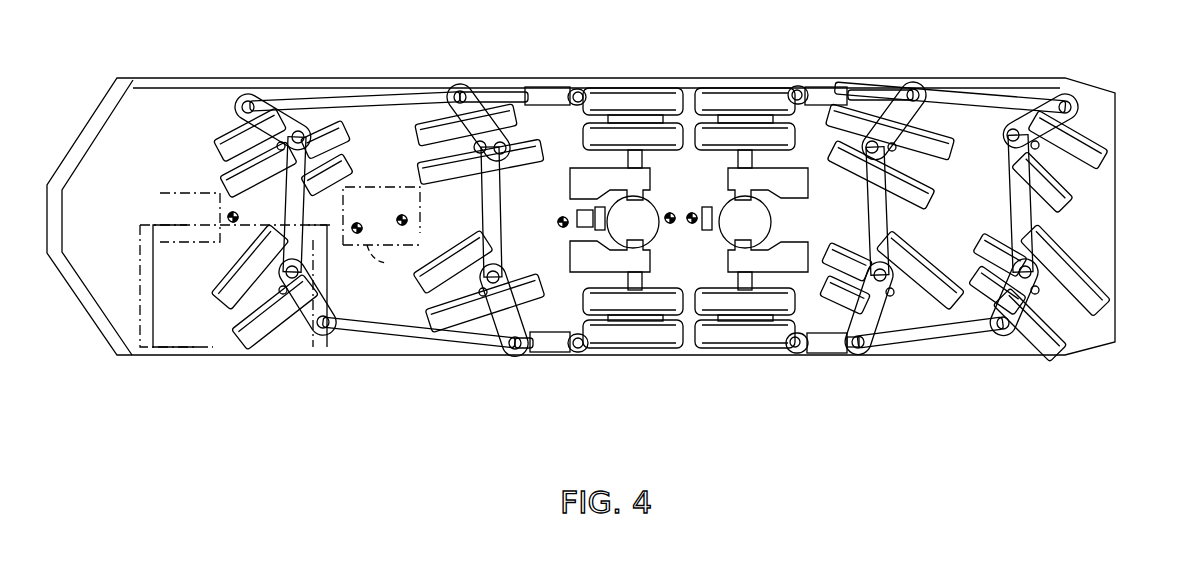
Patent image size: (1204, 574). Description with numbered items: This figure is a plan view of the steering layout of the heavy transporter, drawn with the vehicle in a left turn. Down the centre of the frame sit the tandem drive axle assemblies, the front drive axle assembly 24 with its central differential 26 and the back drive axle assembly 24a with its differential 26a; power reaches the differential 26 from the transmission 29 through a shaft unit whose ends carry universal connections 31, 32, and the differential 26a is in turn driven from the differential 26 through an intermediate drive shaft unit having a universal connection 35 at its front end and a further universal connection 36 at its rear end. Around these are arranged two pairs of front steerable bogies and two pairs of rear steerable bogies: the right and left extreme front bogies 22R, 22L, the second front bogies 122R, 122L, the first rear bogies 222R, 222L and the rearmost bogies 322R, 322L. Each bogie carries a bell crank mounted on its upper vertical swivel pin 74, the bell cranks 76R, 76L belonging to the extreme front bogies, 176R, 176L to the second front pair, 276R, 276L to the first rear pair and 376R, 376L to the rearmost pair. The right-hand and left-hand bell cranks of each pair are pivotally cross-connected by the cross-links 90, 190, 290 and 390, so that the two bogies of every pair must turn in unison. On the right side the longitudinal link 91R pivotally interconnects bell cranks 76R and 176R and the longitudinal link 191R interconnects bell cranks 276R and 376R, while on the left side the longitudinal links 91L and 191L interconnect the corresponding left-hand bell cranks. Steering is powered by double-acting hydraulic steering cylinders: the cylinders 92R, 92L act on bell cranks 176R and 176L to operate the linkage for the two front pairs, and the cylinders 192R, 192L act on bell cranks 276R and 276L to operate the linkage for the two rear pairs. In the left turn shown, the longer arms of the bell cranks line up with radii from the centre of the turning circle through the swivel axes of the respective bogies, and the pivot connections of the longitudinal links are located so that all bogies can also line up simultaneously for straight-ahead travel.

The right extreme front bogie 22R is at (190, 154).
The left extreme front bogie 22L is at (217, 362).
The swivel pin 74 is at (232, 162).
The bell crank 76R is at (260, 122).
The bell crank 76L is at (310, 304).
The cross-link 90 is at (290, 208).
The longitudinal link 91R is at (328, 104).
The longitudinal link 91L is at (348, 330).
The double-acting hydraulic steering cylinder 92R is at (563, 68).
The double-acting hydraulic steering cylinder 92L is at (545, 349).
The right second front bogie 122R is at (416, 141).
The left second front bogie 122L is at (413, 364).
The bell crank 176R is at (505, 125).
The bell crank 176L is at (506, 286).
The cross-link 190 is at (490, 213).
The double-acting hydraulic steering cylinder 192R is at (826, 94).
The double-acting hydraulic steering cylinder 192L is at (808, 348).
The longitudinal link 191R is at (1015, 63).
The longitudinal link 191L is at (925, 340).
The right first rear bogie 222R is at (905, 163).
The left first rear bogie 222L is at (887, 364).
The bell crank 276R is at (952, 62).
The bell crank 276L is at (892, 276).
The cross-link 290 is at (875, 223).
The right rearmost bogie 322R is at (1082, 180).
The left rearmost bogie 322L is at (1048, 364).
The bell crank 376R is at (1050, 131).
The bell crank 376L is at (1035, 282).
The cross-link 390 is at (1023, 217).
The front drive axle assembly 24 is at (652, 362).
The back drive axle assembly 24a is at (753, 362).
The differential 26 is at (648, 233).
The differential 26a is at (763, 218).
The transmission 29 is at (392, 260).
The universal connection 31 is at (420, 225).
The universal connection 32 is at (559, 227).
The universal connection 35 is at (668, 213).
The pivot point 36 is at (691, 213).